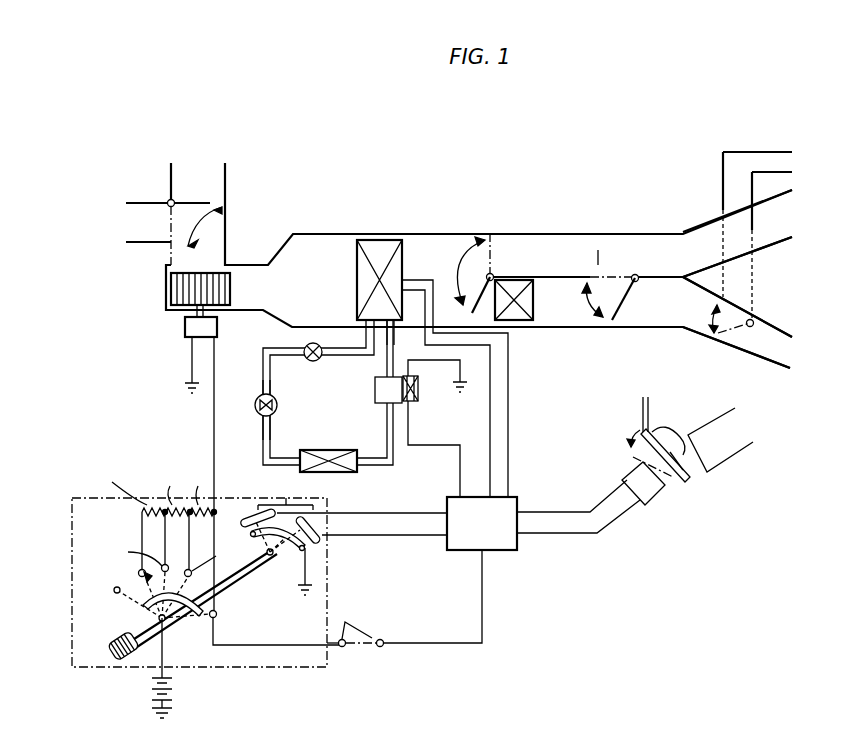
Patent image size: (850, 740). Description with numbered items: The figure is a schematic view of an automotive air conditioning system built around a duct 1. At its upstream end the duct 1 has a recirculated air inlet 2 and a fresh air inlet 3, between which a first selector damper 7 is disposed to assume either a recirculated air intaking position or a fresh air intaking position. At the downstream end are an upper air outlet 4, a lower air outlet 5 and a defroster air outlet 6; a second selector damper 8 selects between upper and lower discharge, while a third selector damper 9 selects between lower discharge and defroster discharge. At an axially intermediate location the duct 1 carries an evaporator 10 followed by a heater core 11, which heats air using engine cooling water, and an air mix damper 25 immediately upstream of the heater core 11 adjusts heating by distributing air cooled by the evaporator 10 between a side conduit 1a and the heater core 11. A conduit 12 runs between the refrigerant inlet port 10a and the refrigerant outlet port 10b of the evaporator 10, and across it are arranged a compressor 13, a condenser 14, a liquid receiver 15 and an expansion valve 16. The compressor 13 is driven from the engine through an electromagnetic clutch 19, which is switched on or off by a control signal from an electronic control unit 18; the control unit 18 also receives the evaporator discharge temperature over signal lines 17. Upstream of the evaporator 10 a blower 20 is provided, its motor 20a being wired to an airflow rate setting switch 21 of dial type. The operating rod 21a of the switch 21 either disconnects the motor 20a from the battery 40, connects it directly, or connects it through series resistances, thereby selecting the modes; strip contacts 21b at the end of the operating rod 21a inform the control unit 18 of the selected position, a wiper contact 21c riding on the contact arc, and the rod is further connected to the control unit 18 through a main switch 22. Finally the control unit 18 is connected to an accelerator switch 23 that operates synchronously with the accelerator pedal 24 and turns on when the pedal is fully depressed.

The duct 1 is at (548, 232).
The side conduit 1a is at (598, 250).
The recirculated air inlet 2 is at (141, 228).
The fresh air inlet 3 is at (208, 170).
The upper air outlet 4 is at (775, 222).
The lower air outlet 5 is at (780, 350).
The defroster air outlet 6 is at (775, 165).
The first selector damper 7 is at (208, 202).
The second selector damper 8 is at (622, 305).
The third selector damper 9 is at (752, 320).
The evaporator 10 is at (375, 247).
The refrigerant inlet port 10a is at (358, 330).
The refrigerant outlet port 10b is at (388, 350).
The heater core 11 is at (510, 315).
The conduit 12 is at (270, 432).
The compressor 13 is at (375, 390).
The condenser 14 is at (323, 448).
The liquid receiver 15 is at (278, 403).
The expansion valve 16 is at (318, 362).
The signal lines 17 is at (508, 428).
The electronic control unit 18 is at (503, 553).
The electromagnetic clutch 19 is at (416, 393).
The blower 20 is at (177, 293).
The motor 20a is at (185, 333).
The airflow rate setting switch 21 is at (160, 500).
The operating rod 21a is at (243, 573).
The strip contacts 21b is at (343, 534).
The wiper contact 21c is at (201, 617).
The main switch 22 is at (370, 635).
The accelerator switch 23 is at (655, 497).
The accelerator pedal 24 is at (665, 440).
The air mix damper 25 is at (482, 297).
The battery 40 is at (178, 700).